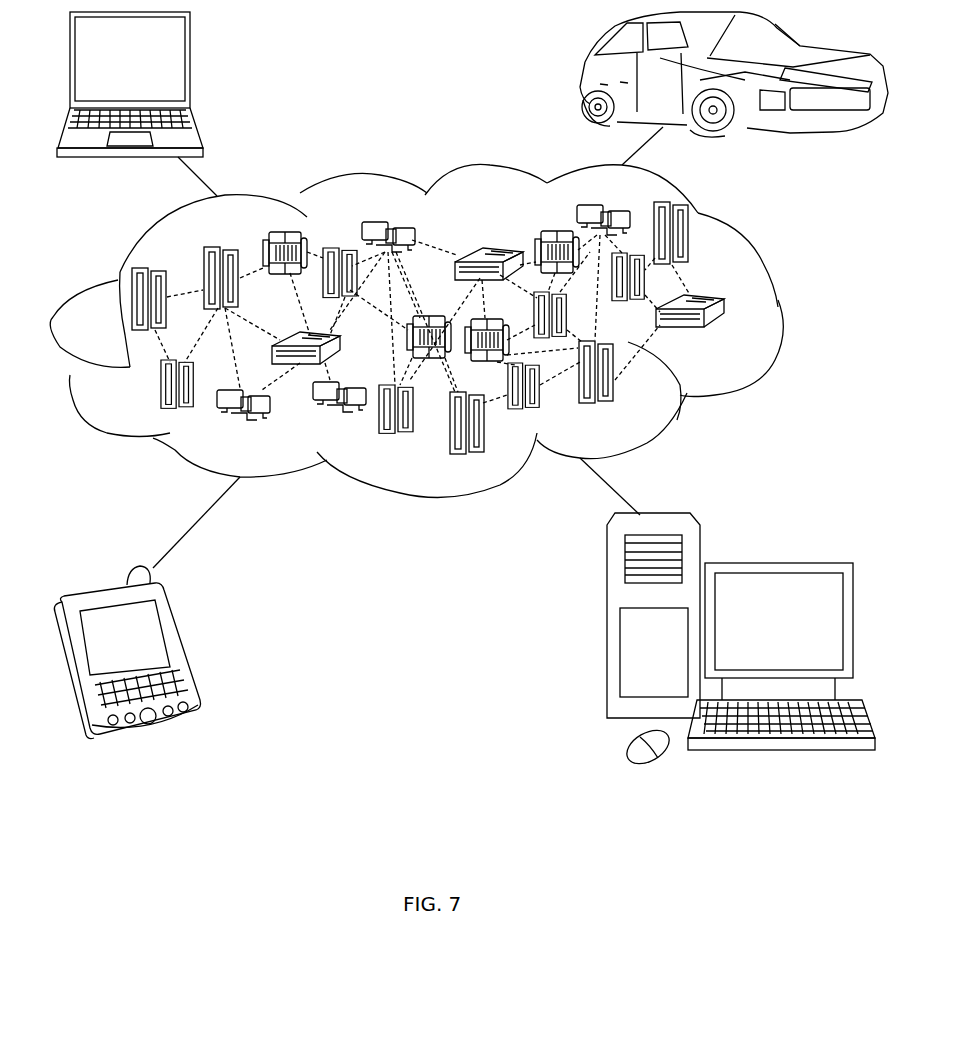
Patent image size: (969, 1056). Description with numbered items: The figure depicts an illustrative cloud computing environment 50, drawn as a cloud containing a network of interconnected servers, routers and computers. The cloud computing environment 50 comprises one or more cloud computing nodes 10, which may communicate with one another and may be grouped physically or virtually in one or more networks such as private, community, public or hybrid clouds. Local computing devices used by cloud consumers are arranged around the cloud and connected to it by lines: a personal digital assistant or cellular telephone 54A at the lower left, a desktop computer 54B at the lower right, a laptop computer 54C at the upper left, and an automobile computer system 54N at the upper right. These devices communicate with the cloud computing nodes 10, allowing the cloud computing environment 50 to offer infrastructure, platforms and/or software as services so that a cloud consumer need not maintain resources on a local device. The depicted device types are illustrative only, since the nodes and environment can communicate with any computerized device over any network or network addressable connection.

The laptop computer 54C is at (190, 67).
The automobile computer system 54N is at (583, 78).
The cloud computing environment 50 is at (777, 303).
The cloud computing node 10 is at (732, 338).
The personal digital assistant or cellular telephone 54A is at (184, 648).
The desktop computer 54B is at (775, 563).